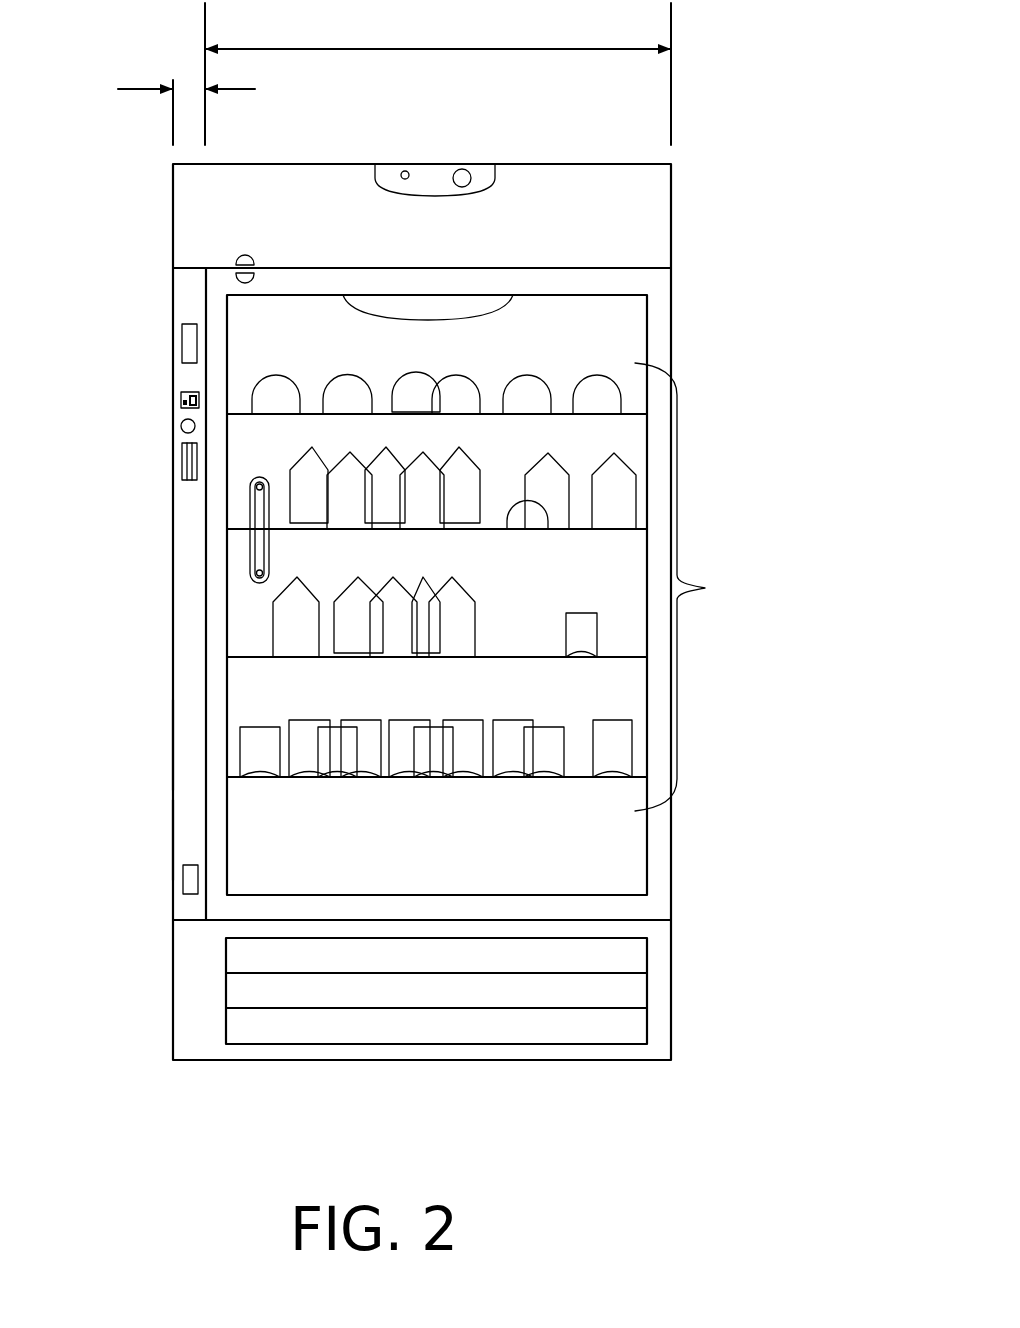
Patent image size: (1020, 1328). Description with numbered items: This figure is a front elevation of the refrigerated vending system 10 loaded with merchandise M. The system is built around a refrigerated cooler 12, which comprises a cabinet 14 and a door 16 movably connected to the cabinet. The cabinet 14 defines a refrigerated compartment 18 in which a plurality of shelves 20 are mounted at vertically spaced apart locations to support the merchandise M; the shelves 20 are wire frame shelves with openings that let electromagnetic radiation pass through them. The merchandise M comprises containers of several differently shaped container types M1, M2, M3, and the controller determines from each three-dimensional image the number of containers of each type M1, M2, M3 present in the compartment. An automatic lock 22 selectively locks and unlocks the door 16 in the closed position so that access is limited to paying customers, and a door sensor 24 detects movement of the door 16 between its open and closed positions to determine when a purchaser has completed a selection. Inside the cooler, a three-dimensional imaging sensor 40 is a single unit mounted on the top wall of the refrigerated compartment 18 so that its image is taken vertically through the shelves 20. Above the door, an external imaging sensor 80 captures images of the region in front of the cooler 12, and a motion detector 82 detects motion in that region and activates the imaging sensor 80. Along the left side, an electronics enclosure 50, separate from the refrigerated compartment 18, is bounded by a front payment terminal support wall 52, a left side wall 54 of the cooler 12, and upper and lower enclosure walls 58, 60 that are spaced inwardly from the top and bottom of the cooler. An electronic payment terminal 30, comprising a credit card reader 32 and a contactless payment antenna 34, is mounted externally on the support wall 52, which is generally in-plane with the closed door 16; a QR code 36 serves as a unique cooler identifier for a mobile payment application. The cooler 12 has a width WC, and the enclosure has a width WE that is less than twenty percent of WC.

The refrigerated vending system 10 is at (748, 835).
The refrigerated cooler 12 is at (160, 813).
The cabinet 14 is at (662, 205).
The door 16 is at (323, 258).
The refrigerated compartment 18 is at (499, 551).
The shelves 20 is at (310, 415).
The automatic lock 22 is at (182, 343).
The door sensor 24 is at (236, 258).
The electronic payment terminal 30 is at (140, 444).
The credit card reader 32 is at (183, 478).
The contactless payment antenna 34 is at (181, 426).
The QR code 36 is at (181, 399).
The three-dimensional imaging sensor 40 is at (428, 302).
The electronics enclosure 50 is at (173, 628).
The payment terminal support wall 52 is at (183, 751).
The left side wall 54 is at (175, 840).
The upper enclosure wall 58 is at (174, 267).
The lower enclosure wall 60 is at (187, 922).
The external imaging sensor 80 is at (462, 168).
The motion detector 82 is at (405, 170).
The merchandise M is at (706, 588).
The first container type M1 is at (357, 375).
The second container type M2 is at (323, 456).
The third container type M3 is at (582, 613).
The width of the refrigerated cooler WC is at (428, 49).
The width of the electronics enclosure WE is at (122, 89).